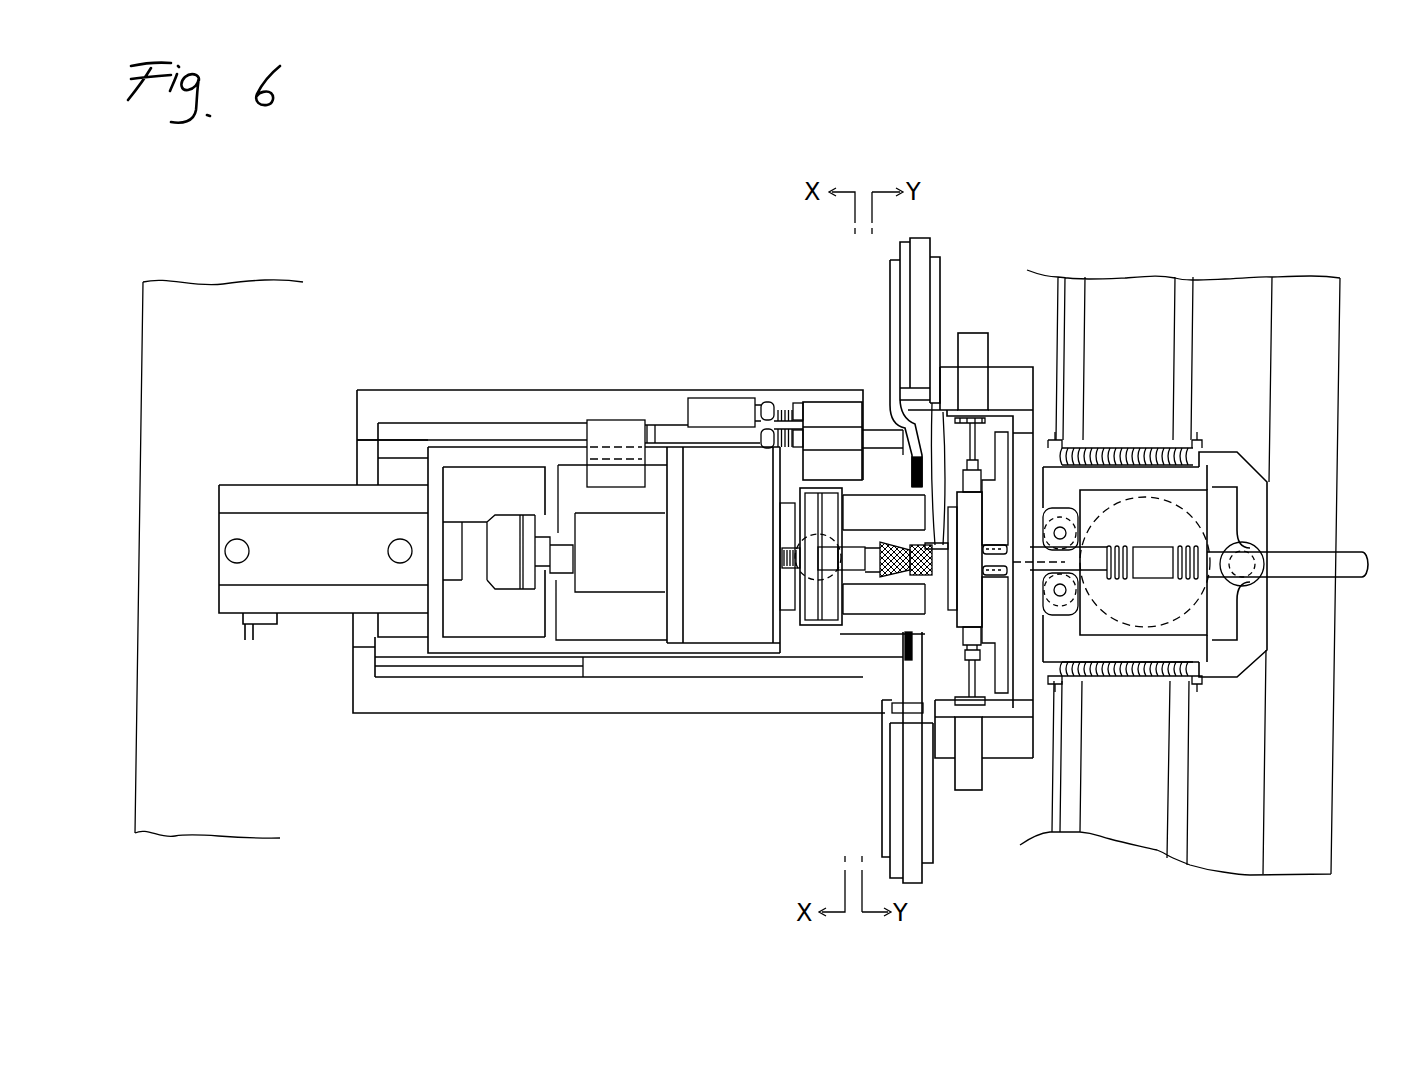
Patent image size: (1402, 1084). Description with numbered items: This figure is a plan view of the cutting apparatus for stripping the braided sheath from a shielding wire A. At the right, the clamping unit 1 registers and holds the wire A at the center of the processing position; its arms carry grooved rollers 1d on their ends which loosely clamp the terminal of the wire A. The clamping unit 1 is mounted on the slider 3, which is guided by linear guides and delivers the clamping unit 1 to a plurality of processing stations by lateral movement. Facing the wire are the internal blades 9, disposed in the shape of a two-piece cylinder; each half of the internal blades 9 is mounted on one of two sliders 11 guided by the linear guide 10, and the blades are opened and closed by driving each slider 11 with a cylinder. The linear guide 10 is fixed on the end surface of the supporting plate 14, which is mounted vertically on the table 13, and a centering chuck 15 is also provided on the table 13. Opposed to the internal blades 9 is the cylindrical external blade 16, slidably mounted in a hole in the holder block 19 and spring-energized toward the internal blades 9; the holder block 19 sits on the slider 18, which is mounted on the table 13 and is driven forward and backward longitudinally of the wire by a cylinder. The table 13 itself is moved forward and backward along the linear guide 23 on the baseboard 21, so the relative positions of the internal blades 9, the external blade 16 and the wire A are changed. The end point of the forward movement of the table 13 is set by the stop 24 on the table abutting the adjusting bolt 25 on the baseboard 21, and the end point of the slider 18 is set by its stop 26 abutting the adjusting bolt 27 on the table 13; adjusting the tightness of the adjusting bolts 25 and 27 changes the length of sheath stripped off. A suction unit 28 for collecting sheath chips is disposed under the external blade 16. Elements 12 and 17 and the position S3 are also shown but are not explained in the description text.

The clamping unit 1 is at (1189, 499).
The grooved rollers 1d is at (1075, 578).
The slider 3 is at (1245, 652).
The internal blades 9 is at (941, 412).
The linear guide 10 is at (968, 513).
The sliders 11 is at (1037, 547).
The actuator blocks 12 is at (980, 342).
The table 13 is at (440, 427).
The supporting plate 14 is at (1018, 720).
The centering chuck 15 is at (900, 420).
The external blade 16 is at (793, 622).
The mounting block 17 is at (265, 493).
The slider 18 is at (620, 618).
The holder block 19 is at (703, 622).
The baseboard 21 is at (531, 390).
The linear guide 23 is at (410, 655).
The stop 24 is at (703, 405).
The adjusting bolt 25 is at (780, 418).
The stop 26 is at (613, 427).
The adjusting bolt 27 is at (786, 425).
The suction unit 28 is at (837, 585).
The sensor S3 is at (887, 578).
The wire A is at (1337, 548).